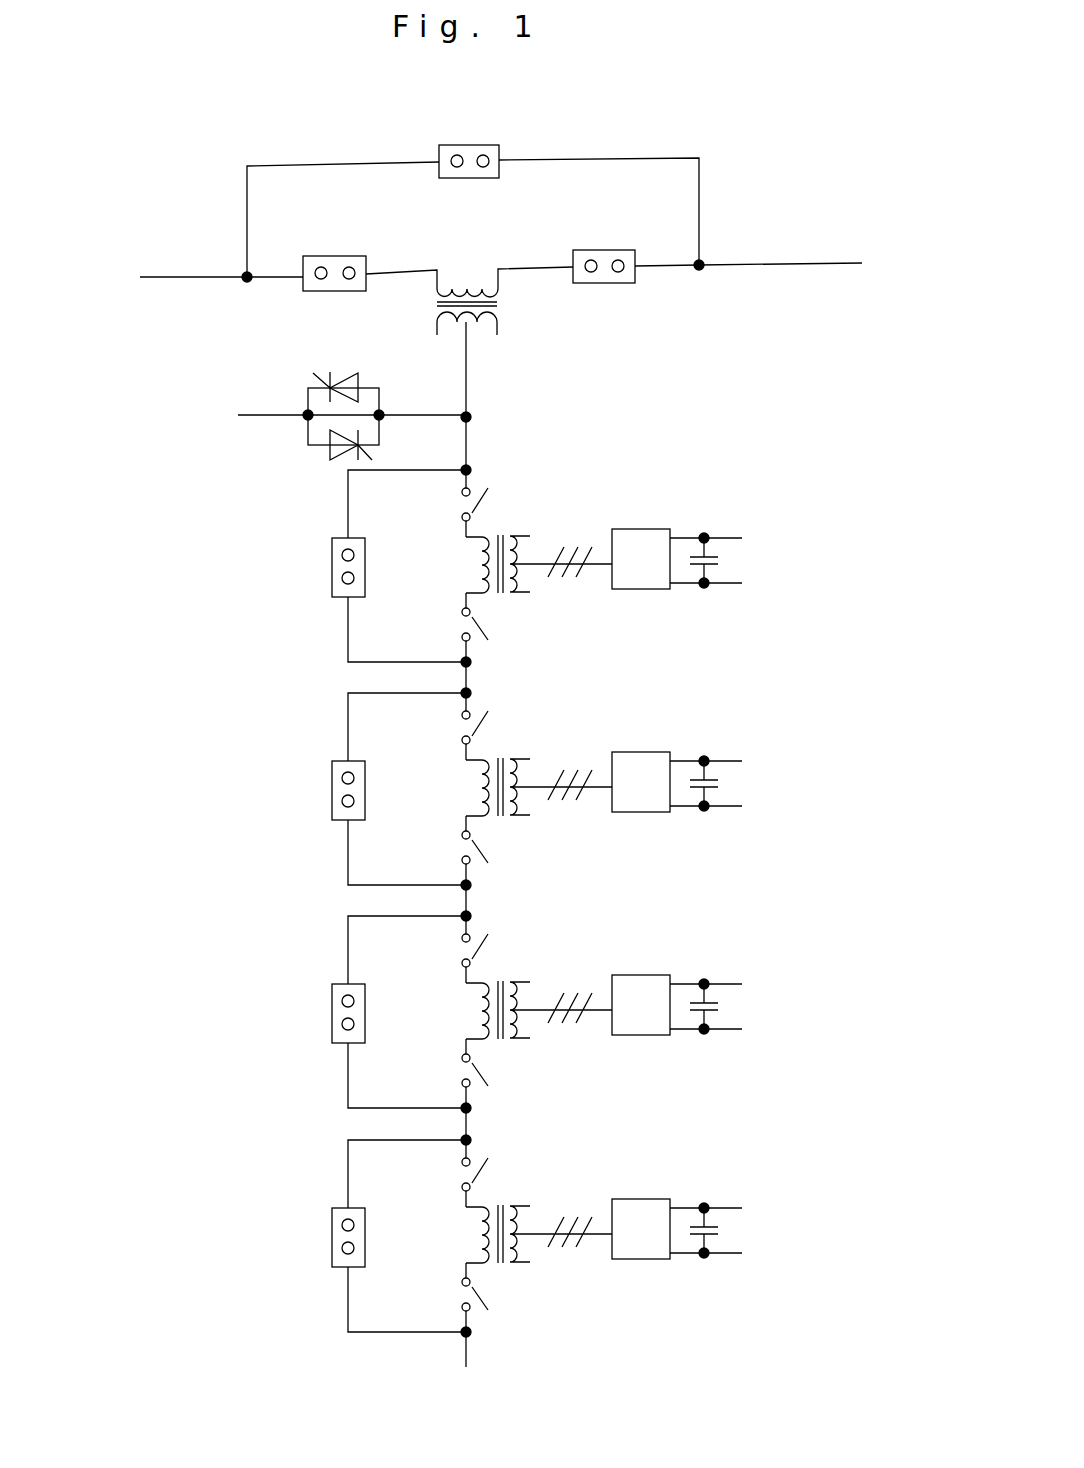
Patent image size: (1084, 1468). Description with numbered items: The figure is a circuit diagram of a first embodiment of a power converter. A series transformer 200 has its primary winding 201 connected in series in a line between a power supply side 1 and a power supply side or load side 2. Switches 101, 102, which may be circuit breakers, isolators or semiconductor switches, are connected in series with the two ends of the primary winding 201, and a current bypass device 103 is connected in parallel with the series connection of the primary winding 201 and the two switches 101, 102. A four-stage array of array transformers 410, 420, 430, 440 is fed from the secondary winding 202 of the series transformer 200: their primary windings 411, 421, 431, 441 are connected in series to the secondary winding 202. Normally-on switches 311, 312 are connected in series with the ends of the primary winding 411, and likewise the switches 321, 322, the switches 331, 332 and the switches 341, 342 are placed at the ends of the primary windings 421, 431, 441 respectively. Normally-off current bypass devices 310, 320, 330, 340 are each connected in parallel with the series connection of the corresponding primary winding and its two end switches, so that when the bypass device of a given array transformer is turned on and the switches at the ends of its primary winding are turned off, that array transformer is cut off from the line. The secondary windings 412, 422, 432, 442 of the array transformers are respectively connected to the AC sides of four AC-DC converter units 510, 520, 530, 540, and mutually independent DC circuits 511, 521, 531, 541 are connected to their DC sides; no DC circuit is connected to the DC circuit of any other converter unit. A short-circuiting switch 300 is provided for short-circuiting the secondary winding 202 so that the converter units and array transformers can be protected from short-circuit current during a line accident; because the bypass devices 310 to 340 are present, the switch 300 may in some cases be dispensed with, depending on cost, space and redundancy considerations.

The power supply side of the line 1 is at (187, 275).
The power supply side or load side of the line 2 is at (755, 263).
The switch 101 is at (347, 253).
The switch 102 is at (615, 248).
The current bypass device 103 is at (481, 143).
The series transformer 200 is at (489, 335).
The primary winding of the series transformer 201 is at (473, 280).
The secondary winding of the series transformer 202 is at (458, 323).
The short-circuiting switch 300 is at (302, 391).
The current bypass device 310 is at (332, 573).
The normally-on switch 311 is at (458, 502).
The normally-on switch 312 is at (460, 622).
The current bypass device 320 is at (352, 789).
The normally-on switch 321 is at (428, 726).
The normally-on switch 322 is at (425, 850).
The current bypass device 330 is at (352, 1012).
The normally-on switch 331 is at (428, 949).
The normally-on switch 332 is at (425, 1073).
The current bypass device 340 is at (352, 1236).
The normally-on switch 341 is at (428, 1173).
The normally-on switch 342 is at (425, 1297).
The array transformer 410 is at (539, 553).
The primary winding of the array transformer 411 is at (488, 597).
The secondary winding of the array transformer 412 is at (522, 557).
The array transformer 420 is at (539, 776).
The primary winding of the array transformer 421 is at (519, 816).
The secondary winding of the array transformer 422 is at (561, 765).
The array transformer 430 is at (539, 999).
The primary winding of the array transformer 431 is at (519, 1039).
The secondary winding of the array transformer 432 is at (561, 988).
The array transformer 440 is at (539, 1223).
The primary winding of the array transformer 441 is at (519, 1263).
The secondary winding of the array transformer 442 is at (561, 1212).
The AC-DC converter unit 510 is at (650, 528).
The DC circuit 511 is at (730, 533).
The AC-DC converter unit 520 is at (677, 740).
The DC circuit 521 is at (731, 751).
The AC-DC converter unit 530 is at (677, 963).
The DC circuit 531 is at (731, 974).
The AC-DC converter unit 540 is at (677, 1187).
The DC circuit 541 is at (731, 1198).